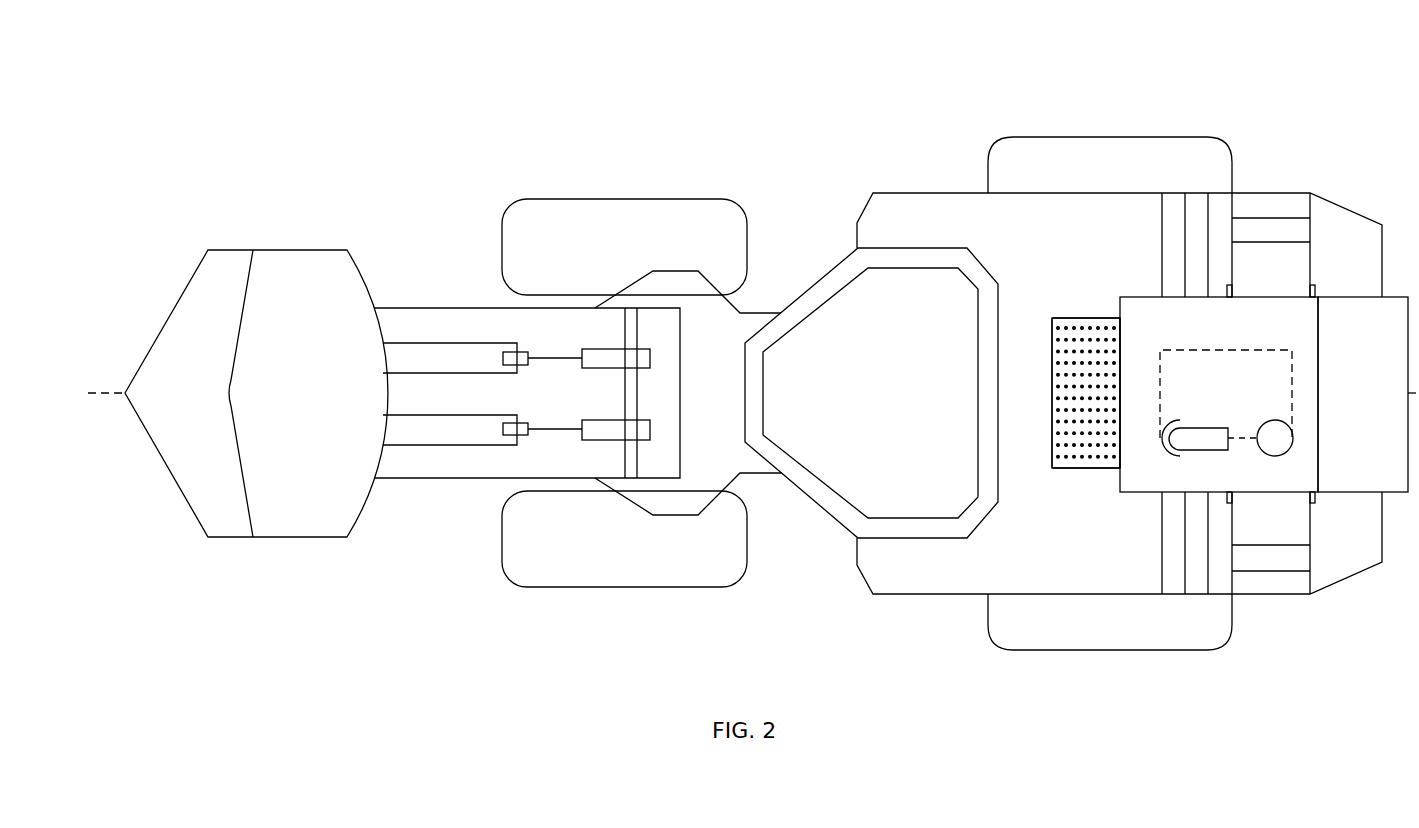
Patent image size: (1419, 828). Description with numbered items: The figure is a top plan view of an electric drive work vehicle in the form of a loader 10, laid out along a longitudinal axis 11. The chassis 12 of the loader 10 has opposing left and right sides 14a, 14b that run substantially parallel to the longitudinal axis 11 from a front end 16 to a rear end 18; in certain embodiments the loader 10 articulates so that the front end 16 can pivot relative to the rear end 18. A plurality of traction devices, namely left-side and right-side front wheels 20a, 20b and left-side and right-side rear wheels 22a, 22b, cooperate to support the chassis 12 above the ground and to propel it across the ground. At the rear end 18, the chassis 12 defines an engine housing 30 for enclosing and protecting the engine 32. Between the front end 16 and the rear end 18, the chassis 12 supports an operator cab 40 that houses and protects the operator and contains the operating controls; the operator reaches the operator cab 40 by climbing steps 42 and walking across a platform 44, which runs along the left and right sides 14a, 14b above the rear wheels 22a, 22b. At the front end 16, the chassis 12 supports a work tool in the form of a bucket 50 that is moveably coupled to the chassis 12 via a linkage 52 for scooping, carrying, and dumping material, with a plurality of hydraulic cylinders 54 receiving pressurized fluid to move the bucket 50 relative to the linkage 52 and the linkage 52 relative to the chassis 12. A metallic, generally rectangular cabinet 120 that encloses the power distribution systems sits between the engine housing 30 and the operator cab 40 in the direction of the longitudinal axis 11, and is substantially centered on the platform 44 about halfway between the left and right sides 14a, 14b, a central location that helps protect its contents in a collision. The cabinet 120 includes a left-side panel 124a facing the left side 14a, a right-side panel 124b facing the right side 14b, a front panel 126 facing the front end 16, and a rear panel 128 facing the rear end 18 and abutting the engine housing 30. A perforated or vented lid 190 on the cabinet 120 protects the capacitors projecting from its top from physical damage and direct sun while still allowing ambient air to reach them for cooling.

The loader 10 is at (1166, 74).
The longitudinal axis 11 is at (122, 388).
The chassis 12 is at (893, 582).
The left side 14a is at (644, 605).
The right side 14b is at (736, 157).
The front end 16 is at (256, 370).
The rear end 18 is at (1372, 181).
The left-side front wheel 20a is at (530, 572).
The right-side front wheel 20b is at (520, 220).
The left-side rear wheel 22a is at (1028, 633).
The right-side rear wheel 22b is at (1033, 152).
The engine housing 30 is at (1248, 313).
The engine 32 is at (1293, 367).
The operator cab 40 is at (845, 318).
The steps 42 is at (1283, 582).
The platform 44 is at (1075, 565).
The bucket 50 is at (272, 525).
The linkage 52 is at (435, 468).
The hydraulic cylinders 54 is at (607, 357).
The cabinet 120 is at (1090, 347).
The left-side panel 124a is at (1073, 468).
The right-side panel 124b is at (1062, 318).
The front panel 126 is at (1045, 420).
The rear panel 128 is at (1120, 350).
The lid 190 is at (1092, 447).